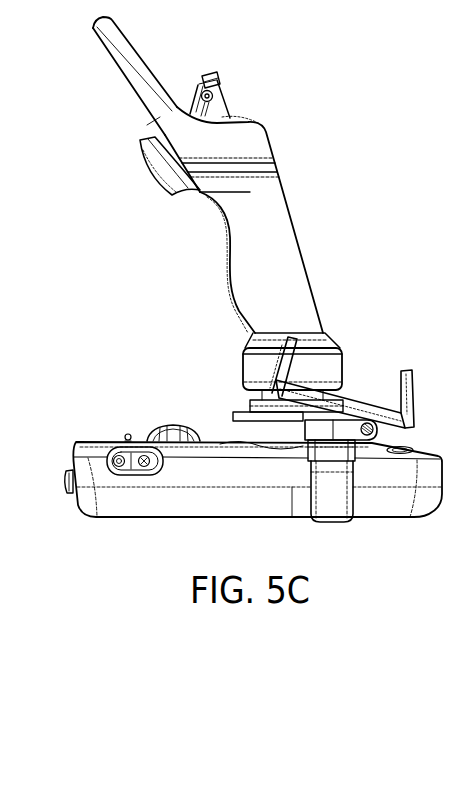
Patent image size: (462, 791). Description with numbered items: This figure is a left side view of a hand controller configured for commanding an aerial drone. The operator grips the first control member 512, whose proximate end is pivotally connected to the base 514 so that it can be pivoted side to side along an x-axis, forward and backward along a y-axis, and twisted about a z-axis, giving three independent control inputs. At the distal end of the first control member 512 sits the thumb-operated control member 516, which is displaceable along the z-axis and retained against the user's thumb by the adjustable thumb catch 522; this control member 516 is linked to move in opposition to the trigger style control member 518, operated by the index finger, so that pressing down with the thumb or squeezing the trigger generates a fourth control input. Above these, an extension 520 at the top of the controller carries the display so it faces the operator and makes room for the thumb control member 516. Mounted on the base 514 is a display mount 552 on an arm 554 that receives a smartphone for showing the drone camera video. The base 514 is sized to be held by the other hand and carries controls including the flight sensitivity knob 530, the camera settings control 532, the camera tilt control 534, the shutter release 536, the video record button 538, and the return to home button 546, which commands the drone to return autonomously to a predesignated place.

The first control member 512 is at (286, 247).
The base 514 is at (414, 497).
The control member 516 is at (216, 108).
The control member 518 is at (170, 171).
The extension 520 is at (118, 78).
The thumb catch 522 is at (208, 78).
The flight sensitivity knob 530 is at (176, 425).
The camera settings control 532 is at (127, 434).
The camera tilt control 534 is at (66, 486).
The shutter release button 536 is at (120, 467).
The video record button 538 is at (142, 467).
The return to home (RTH) button 546 is at (408, 446).
The display mount 552 is at (364, 400).
The arm 554 is at (341, 430).